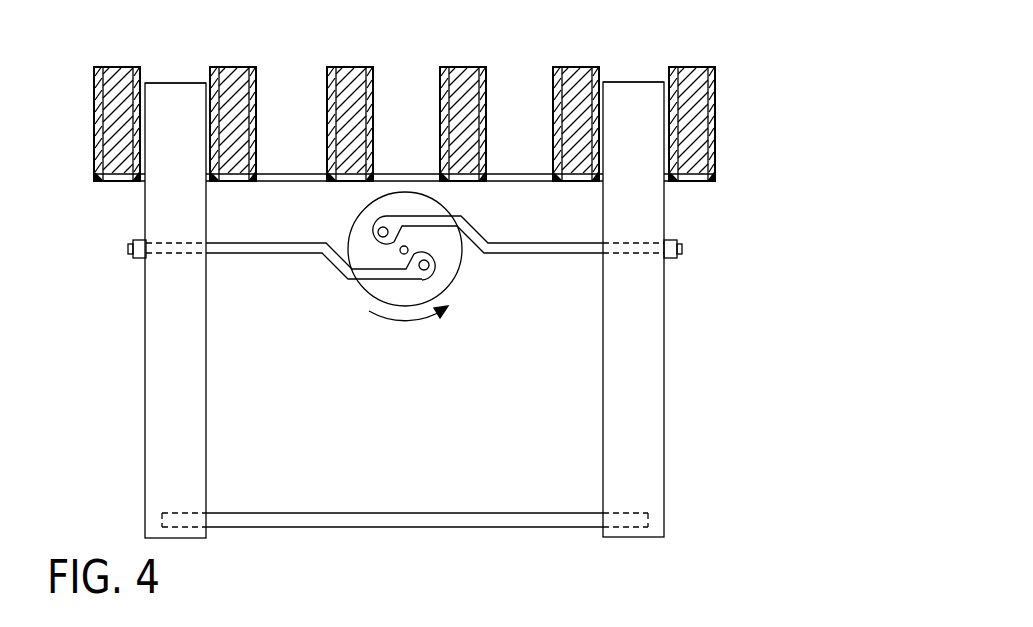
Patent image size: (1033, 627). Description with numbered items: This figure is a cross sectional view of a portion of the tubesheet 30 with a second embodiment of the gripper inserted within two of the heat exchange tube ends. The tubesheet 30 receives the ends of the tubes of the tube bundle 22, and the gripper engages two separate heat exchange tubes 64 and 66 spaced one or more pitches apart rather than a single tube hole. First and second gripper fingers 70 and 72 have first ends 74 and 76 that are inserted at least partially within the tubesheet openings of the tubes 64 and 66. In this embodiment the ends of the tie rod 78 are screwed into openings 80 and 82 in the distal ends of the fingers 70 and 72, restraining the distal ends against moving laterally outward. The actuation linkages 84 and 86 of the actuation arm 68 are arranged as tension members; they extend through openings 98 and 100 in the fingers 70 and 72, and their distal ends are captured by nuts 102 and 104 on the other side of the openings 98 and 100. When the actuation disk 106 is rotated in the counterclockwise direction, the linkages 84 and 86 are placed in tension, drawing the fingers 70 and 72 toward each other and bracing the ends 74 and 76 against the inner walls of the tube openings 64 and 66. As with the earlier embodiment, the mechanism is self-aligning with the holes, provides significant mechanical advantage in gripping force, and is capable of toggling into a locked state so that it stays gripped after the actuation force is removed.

The tube bundle 22 is at (443, 103).
The tubesheet 30 is at (717, 80).
The heat exchange tube 64 is at (182, 82).
The heat exchange tube 66 is at (618, 80).
The actuation arm 68 is at (470, 259).
The first gripper finger 70 is at (145, 360).
The second gripper finger 72 is at (664, 352).
The first end of finger 74 is at (163, 82).
The first end of finger 76 is at (642, 82).
The tie rod 78 is at (429, 527).
The opening 80 is at (170, 528).
The opening 82 is at (623, 528).
The actuation linkage 84 is at (241, 254).
The actuation linkage 86 is at (526, 249).
The opening 98 is at (173, 243).
The opening 100 is at (647, 243).
The nut 102 is at (128, 249).
The nut 104 is at (682, 240).
The actuation disk 106 is at (348, 243).